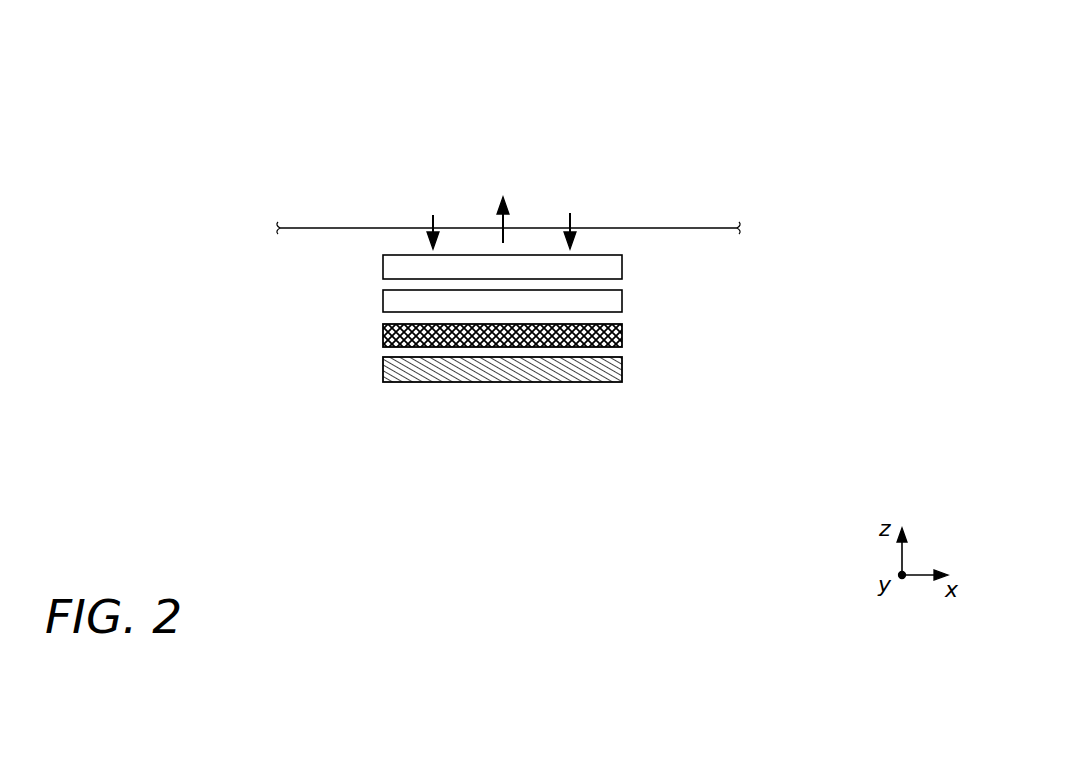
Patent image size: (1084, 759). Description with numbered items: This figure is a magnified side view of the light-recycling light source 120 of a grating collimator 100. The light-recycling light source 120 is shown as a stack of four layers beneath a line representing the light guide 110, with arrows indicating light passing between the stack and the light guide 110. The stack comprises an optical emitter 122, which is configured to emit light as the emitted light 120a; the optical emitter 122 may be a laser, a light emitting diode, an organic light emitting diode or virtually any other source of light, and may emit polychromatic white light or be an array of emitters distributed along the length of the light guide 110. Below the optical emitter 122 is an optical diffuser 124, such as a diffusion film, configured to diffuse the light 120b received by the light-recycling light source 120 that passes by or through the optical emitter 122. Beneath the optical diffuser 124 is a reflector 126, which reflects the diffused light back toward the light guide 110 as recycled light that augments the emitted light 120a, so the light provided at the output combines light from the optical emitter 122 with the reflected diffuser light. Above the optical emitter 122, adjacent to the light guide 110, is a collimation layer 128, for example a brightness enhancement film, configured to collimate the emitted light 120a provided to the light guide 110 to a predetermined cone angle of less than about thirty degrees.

The grating collimator 100 is at (788, 62).
The light guide 110 is at (665, 176).
The light-recycling light source 120 is at (638, 427).
The emitted light 120a is at (487, 182).
The received light 120b is at (427, 222).
The optical emitter 122 is at (622, 297).
The optical diffuser 124 is at (383, 331).
The reflector 126 is at (622, 367).
The collimation layer 128 is at (383, 263).